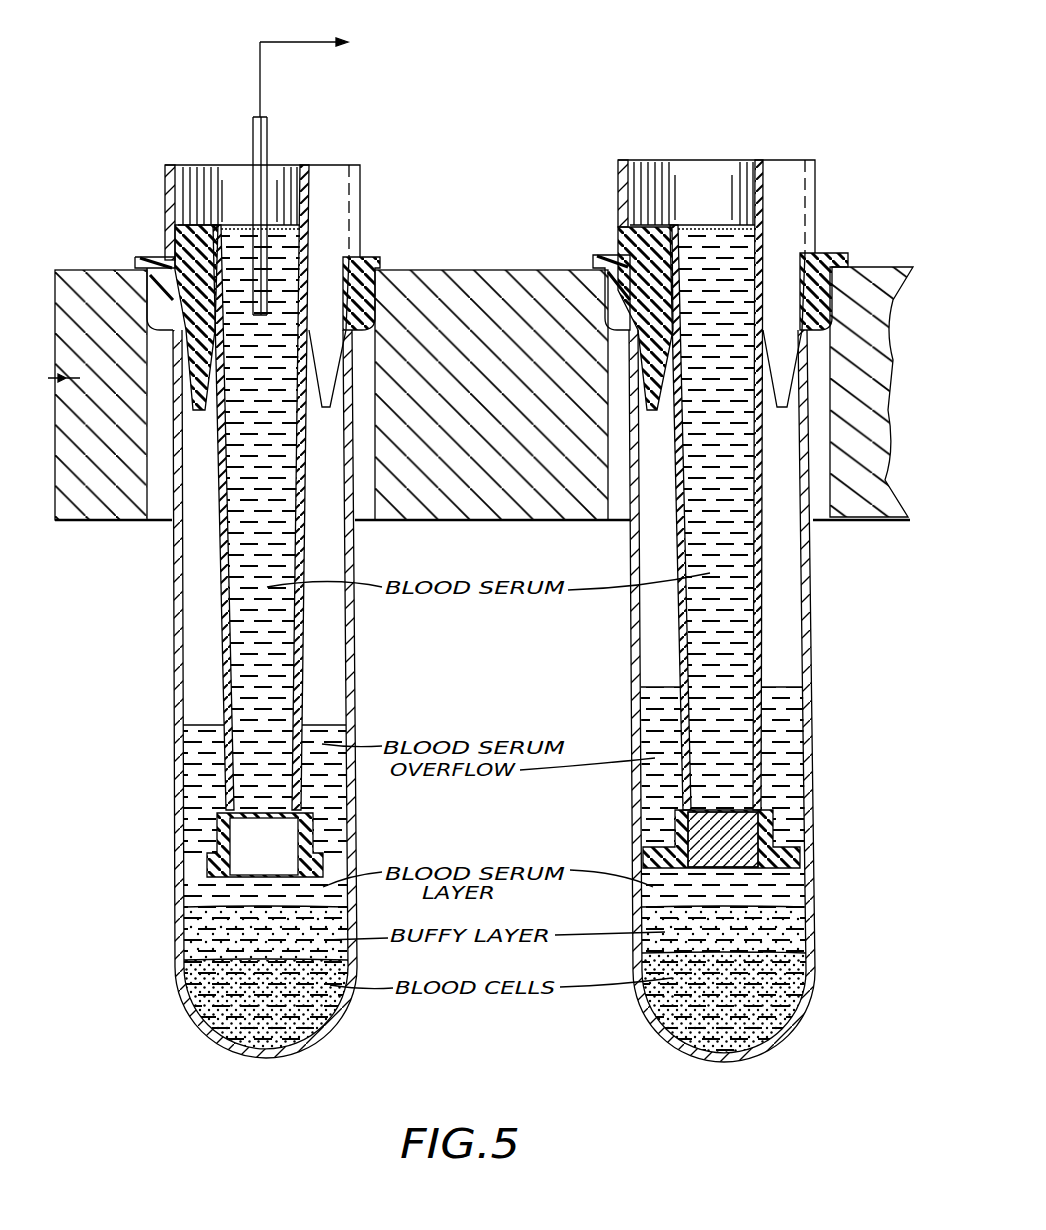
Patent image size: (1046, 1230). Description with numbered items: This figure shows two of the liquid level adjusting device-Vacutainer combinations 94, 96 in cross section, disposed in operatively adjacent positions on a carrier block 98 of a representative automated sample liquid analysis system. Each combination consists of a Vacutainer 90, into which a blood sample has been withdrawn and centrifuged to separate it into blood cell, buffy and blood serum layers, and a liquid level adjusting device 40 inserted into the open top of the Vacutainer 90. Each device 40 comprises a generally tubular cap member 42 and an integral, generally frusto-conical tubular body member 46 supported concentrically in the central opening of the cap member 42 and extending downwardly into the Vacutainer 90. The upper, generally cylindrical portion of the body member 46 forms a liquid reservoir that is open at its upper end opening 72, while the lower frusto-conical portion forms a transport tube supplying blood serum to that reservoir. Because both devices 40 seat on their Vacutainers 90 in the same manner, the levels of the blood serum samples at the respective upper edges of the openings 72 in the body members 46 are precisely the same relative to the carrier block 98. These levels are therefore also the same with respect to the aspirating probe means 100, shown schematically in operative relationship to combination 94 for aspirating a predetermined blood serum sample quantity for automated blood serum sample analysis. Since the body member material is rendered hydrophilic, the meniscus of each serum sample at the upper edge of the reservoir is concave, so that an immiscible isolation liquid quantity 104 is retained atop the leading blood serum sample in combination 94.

The liquid level adjusting device 40 is at (222, 647).
The cap member 42 is at (167, 248).
The tubular body member 46 is at (297, 660).
The upper end opening 72 is at (222, 226).
The Vacutainer 90 is at (356, 702).
The liquid level adjusting device-Vacutainer combination 94 is at (371, 221).
The liquid level adjusting device-Vacutainer combination 96 is at (821, 192).
The carrier block 98 is at (96, 520).
The aspirating probe means 100 is at (266, 128).
The immiscible isolation liquid quantity 104 is at (273, 225).